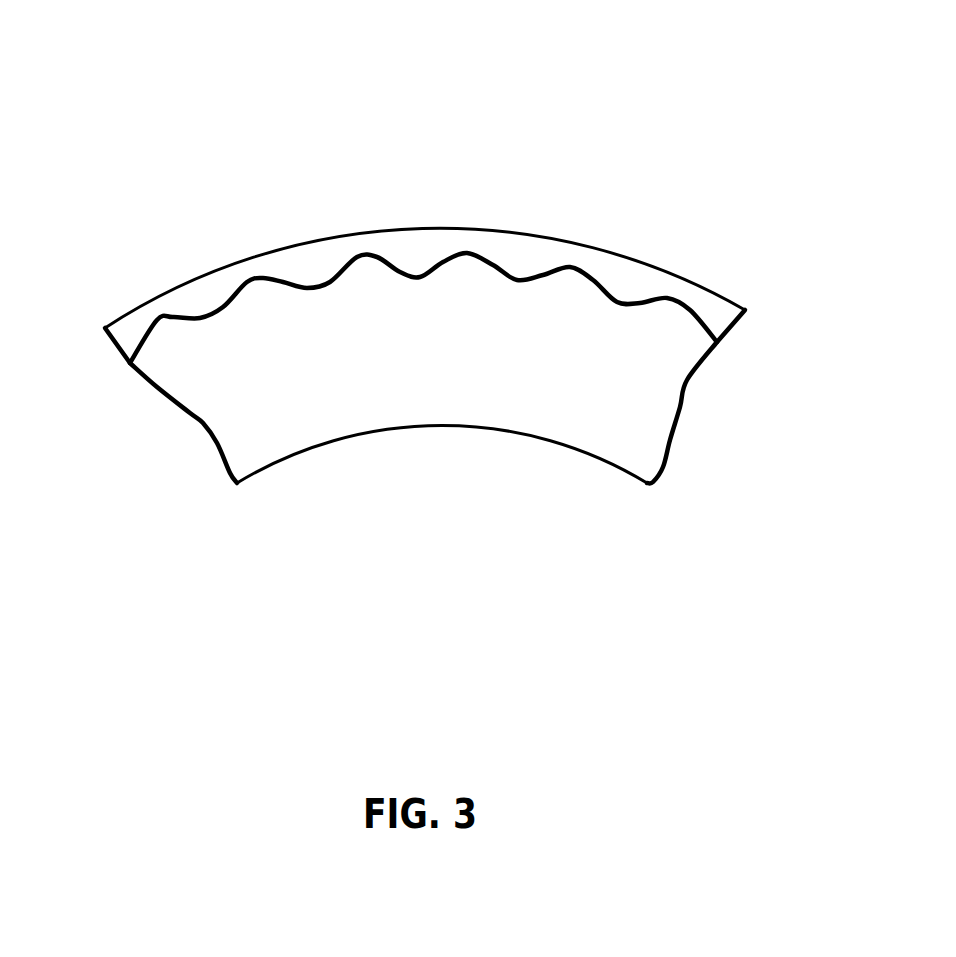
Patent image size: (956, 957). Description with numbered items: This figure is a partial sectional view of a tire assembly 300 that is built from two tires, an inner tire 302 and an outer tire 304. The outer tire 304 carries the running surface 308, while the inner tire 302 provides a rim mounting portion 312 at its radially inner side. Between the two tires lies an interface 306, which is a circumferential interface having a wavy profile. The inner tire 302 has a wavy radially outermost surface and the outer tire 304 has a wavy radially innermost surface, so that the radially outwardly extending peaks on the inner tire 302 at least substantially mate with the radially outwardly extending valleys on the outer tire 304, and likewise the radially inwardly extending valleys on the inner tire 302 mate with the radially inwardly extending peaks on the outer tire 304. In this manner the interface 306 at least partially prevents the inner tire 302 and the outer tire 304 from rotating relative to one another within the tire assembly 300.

The tire assembly 300 is at (439, 287).
The inner tire 302 is at (200, 427).
The outer tire 304 is at (153, 310).
The interface 306 is at (385, 262).
The running surface 308 is at (700, 280).
The rim mounting portion 312 is at (430, 430).